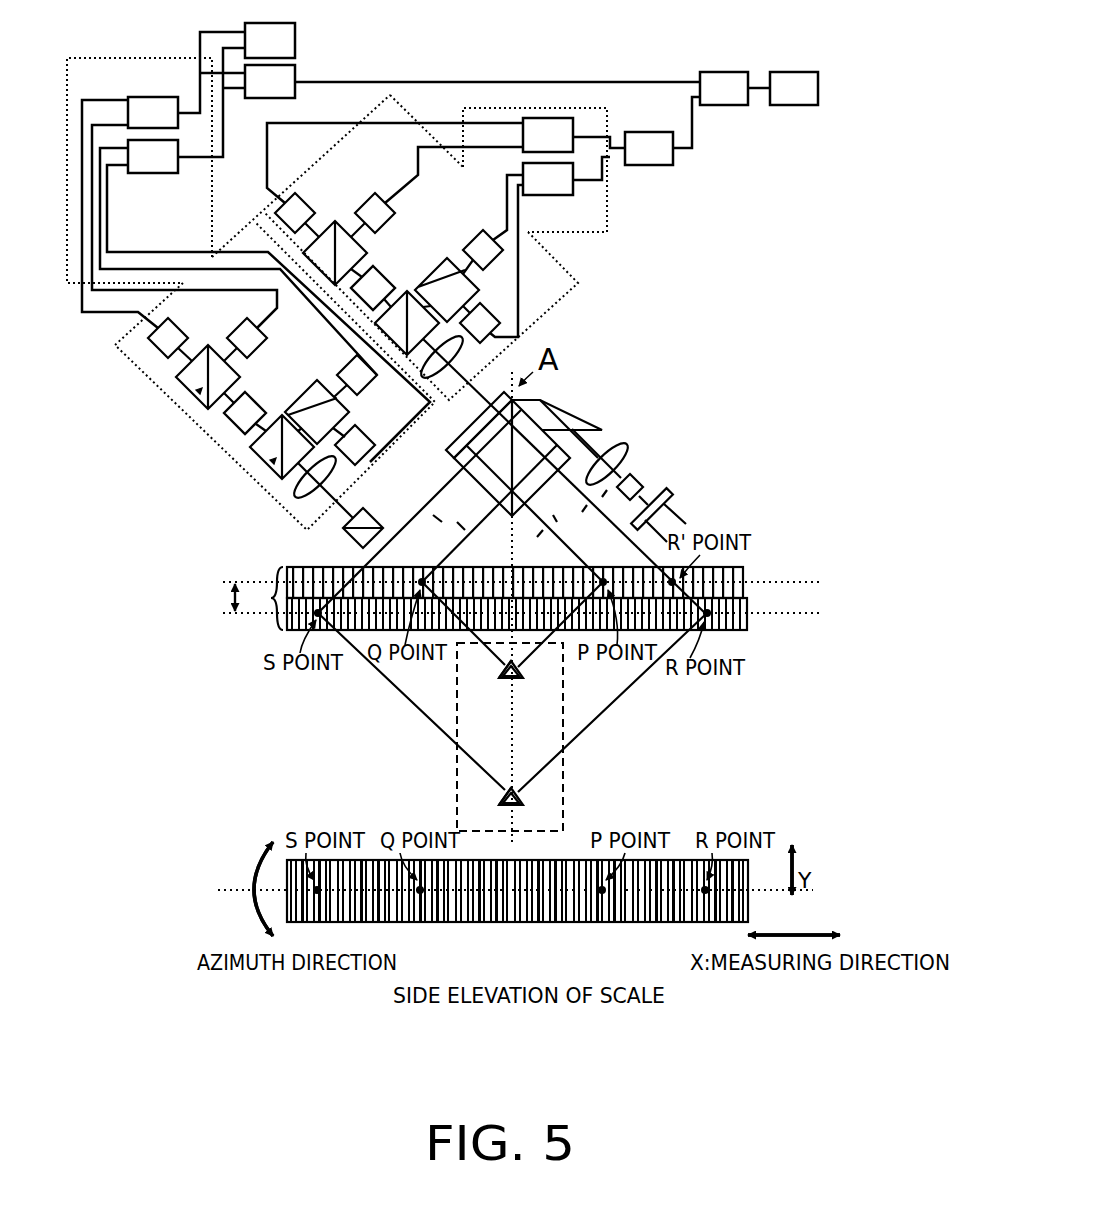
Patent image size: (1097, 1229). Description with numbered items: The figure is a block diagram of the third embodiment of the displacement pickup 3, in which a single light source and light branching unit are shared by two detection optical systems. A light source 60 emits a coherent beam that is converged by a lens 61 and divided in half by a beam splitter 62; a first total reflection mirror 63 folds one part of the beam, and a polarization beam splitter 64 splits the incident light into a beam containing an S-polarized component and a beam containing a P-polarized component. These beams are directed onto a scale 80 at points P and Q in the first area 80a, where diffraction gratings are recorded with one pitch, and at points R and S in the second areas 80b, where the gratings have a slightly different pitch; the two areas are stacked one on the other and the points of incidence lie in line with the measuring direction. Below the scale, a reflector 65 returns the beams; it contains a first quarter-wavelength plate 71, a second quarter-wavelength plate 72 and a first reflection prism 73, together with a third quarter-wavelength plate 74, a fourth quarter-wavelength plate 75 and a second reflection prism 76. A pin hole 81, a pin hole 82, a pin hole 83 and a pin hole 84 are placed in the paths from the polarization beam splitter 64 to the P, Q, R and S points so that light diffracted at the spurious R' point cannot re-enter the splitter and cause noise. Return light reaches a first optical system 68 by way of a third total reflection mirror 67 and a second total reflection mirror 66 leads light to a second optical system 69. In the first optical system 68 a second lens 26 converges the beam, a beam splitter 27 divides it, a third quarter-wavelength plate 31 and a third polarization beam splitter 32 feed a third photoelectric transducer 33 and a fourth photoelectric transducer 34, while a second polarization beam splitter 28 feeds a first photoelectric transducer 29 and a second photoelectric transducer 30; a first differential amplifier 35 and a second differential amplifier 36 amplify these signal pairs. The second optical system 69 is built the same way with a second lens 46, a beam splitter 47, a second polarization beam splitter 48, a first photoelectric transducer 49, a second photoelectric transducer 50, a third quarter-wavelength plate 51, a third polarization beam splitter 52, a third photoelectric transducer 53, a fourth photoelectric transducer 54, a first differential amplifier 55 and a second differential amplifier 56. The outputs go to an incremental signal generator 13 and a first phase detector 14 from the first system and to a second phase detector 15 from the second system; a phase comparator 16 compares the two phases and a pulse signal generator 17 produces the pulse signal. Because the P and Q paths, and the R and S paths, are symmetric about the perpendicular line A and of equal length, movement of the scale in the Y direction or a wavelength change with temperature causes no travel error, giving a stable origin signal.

The displacement pickup 3 is at (749, 46).
The incremental signal generator 13 is at (236, 68).
The first phase detector 14 is at (236, 102).
The second phase detector 15 is at (623, 156).
The phase comparator 16 is at (521, 110).
The pulse signal generator 17 is at (783, 88).
The second lens 26 is at (305, 490).
The beam splitter 27 is at (263, 457).
The second polarization beam splitter 28 is at (310, 387).
The first photoelectric transducer 29 is at (355, 445).
The second photoelectric transducer 30 is at (357, 375).
The third quarter-wavelength plate 31 is at (233, 430).
The third polarization beam splitter 32 is at (197, 392).
The third photoelectric transducer 33 is at (245, 339).
The fourth photoelectric transducer 34 is at (170, 339).
The first differential amplifier 35 is at (153, 156).
The second differential amplifier 36 is at (153, 112).
The second lens 46 is at (454, 352).
The beam splitter 47 is at (406, 300).
The second polarization beam splitter 48 is at (430, 266).
The first photoelectric transducer 49 is at (480, 323).
The second photoelectric transducer 50 is at (483, 250).
The third quarter-wavelength plate 51 is at (372, 272).
The third polarization beam splitter 52 is at (333, 230).
The third photoelectric transducer 53 is at (373, 215).
The fourth photoelectric transducer 54 is at (297, 215).
The first differential amplifier 55 is at (531, 250).
The second differential amplifier 56 is at (420, 160).
The light source 60 is at (645, 490).
The lens 61 is at (618, 452).
The beam splitter 62 is at (588, 432).
The first total reflection mirror 63 is at (558, 404).
The polarization beam splitter 64 is at (486, 478).
The reflector 65 is at (565, 822).
The second total reflection mirror 66 is at (447, 436).
The third total reflection mirror 67 is at (365, 512).
The first optical system 68 is at (89, 56).
The second optical system 69 is at (611, 219).
The first quarter-wavelength plate 71 is at (524, 669).
The second quarter-wavelength plate 72 is at (499, 669).
The first reflection prism 73 is at (506, 682).
The third quarter-wavelength plate 74 is at (524, 796).
The fourth quarter-wavelength plate 75 is at (499, 796).
The second reflection prism 76 is at (507, 806).
The scale 80 is at (245, 598).
The first area 80a is at (745, 575).
The second areas 80b is at (747, 626).
The pin hole 81 is at (535, 514).
The pin hole 82 is at (489, 513).
The pin hole 83 is at (565, 477).
The pin hole 84 is at (419, 511).